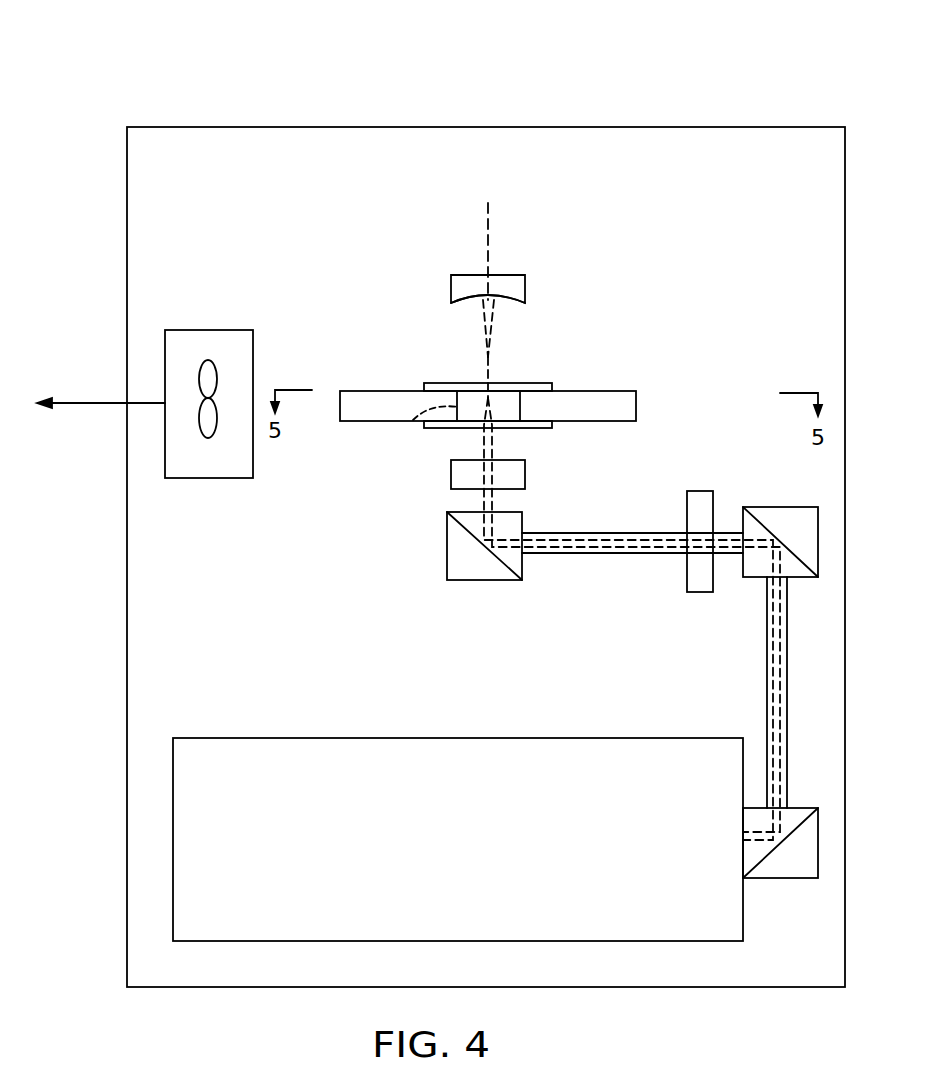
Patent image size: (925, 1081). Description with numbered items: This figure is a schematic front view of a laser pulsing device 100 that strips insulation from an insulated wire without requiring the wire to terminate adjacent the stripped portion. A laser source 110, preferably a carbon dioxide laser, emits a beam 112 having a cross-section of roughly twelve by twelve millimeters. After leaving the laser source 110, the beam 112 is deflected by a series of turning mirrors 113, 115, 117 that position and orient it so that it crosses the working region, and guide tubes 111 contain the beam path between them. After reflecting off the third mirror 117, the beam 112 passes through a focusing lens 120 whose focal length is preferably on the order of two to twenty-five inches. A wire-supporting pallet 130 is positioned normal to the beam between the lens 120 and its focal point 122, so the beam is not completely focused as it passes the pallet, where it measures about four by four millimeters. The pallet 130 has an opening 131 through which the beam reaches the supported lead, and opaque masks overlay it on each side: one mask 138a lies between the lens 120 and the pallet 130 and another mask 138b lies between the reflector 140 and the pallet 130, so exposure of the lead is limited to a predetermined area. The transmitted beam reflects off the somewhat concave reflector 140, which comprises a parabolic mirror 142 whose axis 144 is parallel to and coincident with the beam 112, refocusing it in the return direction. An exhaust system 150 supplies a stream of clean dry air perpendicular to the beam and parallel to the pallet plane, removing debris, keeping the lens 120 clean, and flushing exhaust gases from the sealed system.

The laser pulsing device 100 is at (782, 118).
The laser source 110 is at (386, 738).
The guide tubes 111 is at (788, 720).
The beam 112 is at (618, 548).
The turning mirror 113 is at (762, 860).
The turning mirror 115 is at (765, 523).
The turning mirror 117 is at (500, 563).
The focusing lens 120 is at (450, 473).
The focal point 122 is at (490, 360).
The wire-supporting pallet 130 is at (638, 408).
The opening 131 is at (406, 427).
The mask 138a is at (537, 428).
The mask 138b is at (537, 383).
The reflector 140 is at (527, 288).
The parabolic mirror 142 is at (462, 301).
The axis 144 is at (490, 223).
The exhaust system 150 is at (212, 330).